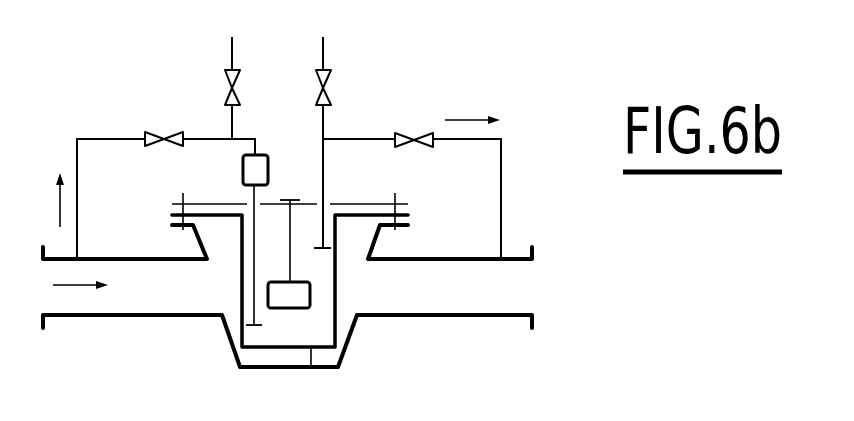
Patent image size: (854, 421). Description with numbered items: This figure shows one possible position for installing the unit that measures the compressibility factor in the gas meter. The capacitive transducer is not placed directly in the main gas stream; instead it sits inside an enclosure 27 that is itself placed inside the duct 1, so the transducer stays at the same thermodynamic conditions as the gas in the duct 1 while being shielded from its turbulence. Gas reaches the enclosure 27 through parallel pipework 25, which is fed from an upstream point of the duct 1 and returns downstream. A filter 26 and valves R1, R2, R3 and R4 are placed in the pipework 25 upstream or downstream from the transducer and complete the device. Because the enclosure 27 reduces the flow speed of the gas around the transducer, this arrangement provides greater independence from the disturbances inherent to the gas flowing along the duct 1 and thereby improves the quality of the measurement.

The duct 1 is at (137, 315).
The parallel pipework 25 is at (88, 137).
The filter 26 is at (243, 166).
The enclosure 27 is at (313, 367).
The valve R1 is at (164, 124).
The valve R2 is at (414, 126).
The valve R3 is at (246, 88).
The valve R4 is at (337, 142).